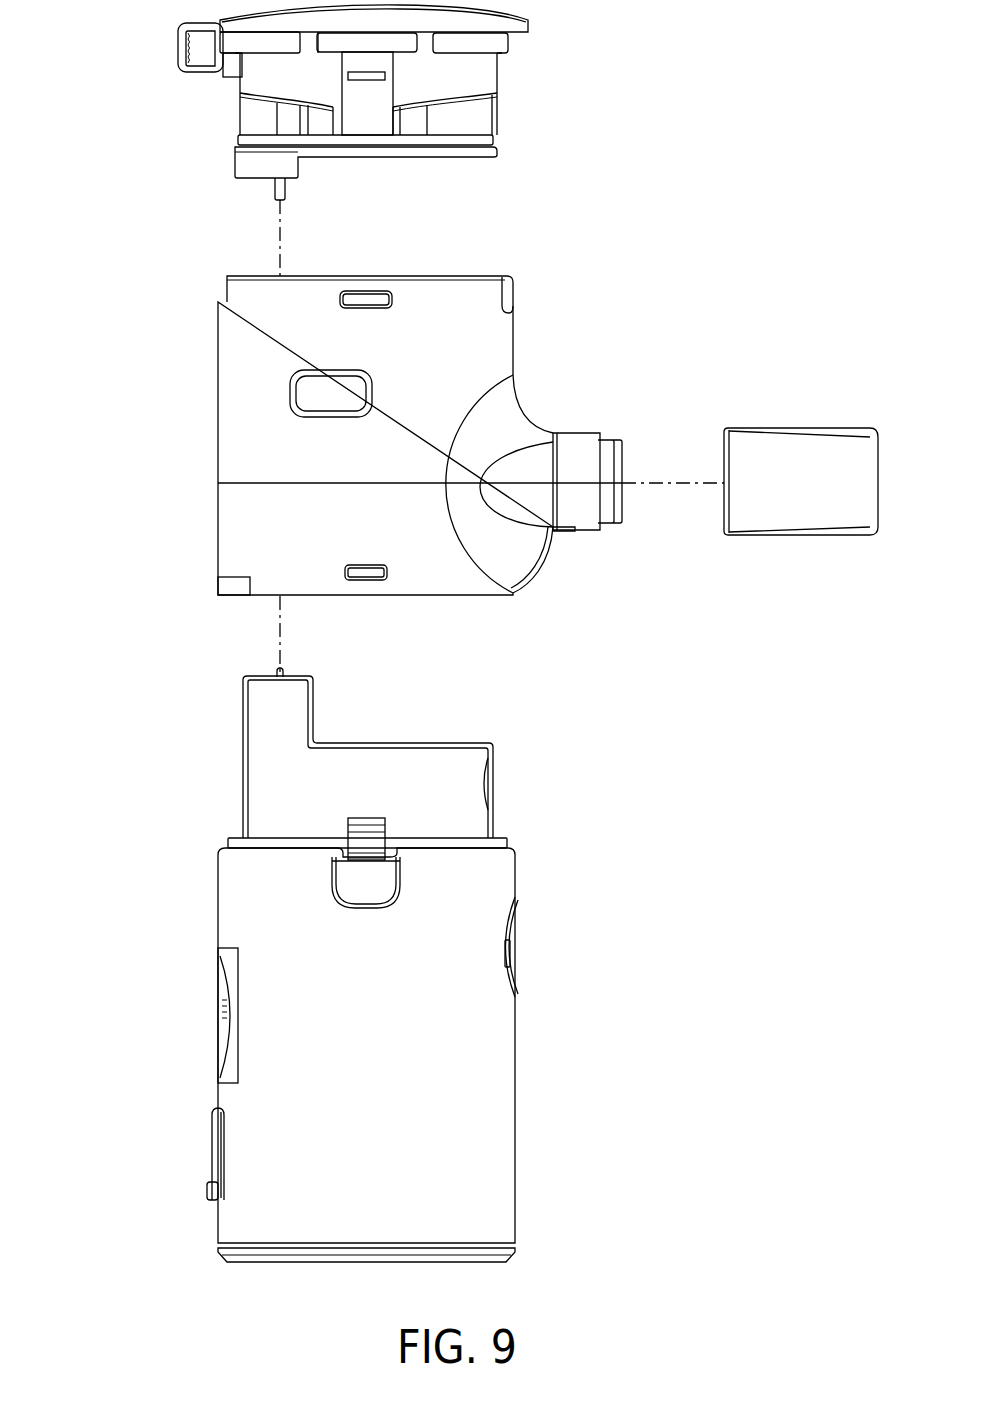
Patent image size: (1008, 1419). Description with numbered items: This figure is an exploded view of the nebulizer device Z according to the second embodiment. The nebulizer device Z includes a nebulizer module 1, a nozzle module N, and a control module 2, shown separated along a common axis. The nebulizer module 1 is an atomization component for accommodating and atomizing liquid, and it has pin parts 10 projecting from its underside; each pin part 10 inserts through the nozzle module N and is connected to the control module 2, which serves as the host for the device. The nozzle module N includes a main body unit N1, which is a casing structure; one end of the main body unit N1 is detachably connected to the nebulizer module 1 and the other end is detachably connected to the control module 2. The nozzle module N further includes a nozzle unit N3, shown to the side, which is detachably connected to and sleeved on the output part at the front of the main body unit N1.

The nebulizer device Z is at (112, 94).
The nebulizer module 1 is at (378, 114).
The pin part 10 is at (272, 190).
The nozzle module N is at (384, 435).
The main body unit N1 is at (238, 443).
The nozzle unit N3 is at (800, 452).
The control module 2 is at (518, 1080).